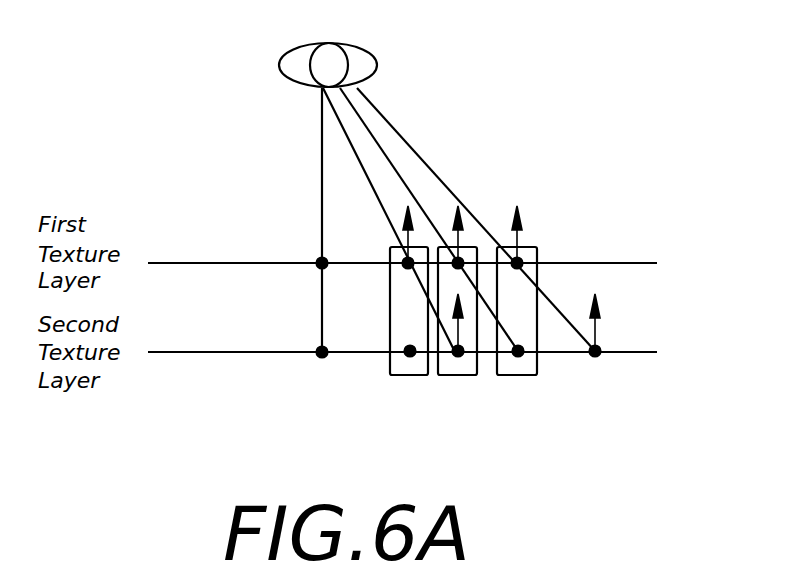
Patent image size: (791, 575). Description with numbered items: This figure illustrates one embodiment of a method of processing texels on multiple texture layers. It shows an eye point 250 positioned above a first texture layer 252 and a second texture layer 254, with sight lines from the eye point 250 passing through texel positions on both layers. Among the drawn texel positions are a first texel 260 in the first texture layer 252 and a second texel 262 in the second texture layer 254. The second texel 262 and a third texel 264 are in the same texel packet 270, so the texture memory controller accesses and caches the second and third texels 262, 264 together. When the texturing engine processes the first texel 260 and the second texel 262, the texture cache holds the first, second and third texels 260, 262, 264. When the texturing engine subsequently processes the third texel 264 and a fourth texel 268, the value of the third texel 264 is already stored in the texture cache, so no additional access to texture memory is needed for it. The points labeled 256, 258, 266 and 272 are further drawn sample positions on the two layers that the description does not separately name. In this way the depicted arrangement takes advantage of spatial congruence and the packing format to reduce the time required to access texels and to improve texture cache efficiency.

The eye point 250 is at (372, 52).
The first texture layer 252 is at (178, 262).
The second texture layer 254 is at (178, 351).
The first layer sample point (center) 256 is at (316, 262).
The second layer sample point (center) 258 is at (318, 356).
The first texel 260 is at (403, 265).
The second texel 262 is at (448, 376).
The third texel 264 is at (477, 247).
The third texel column 266 is at (527, 247).
The fourth texel 268 is at (530, 376).
The texel packet 270 is at (468, 376).
The second layer sample point (outer) 272 is at (538, 358).